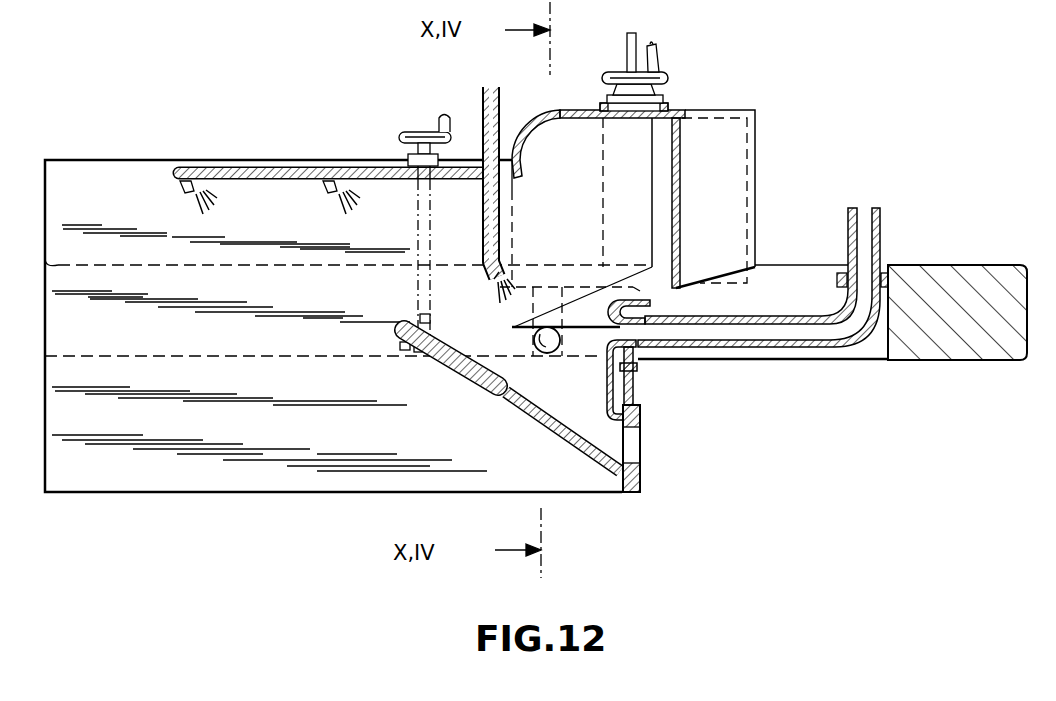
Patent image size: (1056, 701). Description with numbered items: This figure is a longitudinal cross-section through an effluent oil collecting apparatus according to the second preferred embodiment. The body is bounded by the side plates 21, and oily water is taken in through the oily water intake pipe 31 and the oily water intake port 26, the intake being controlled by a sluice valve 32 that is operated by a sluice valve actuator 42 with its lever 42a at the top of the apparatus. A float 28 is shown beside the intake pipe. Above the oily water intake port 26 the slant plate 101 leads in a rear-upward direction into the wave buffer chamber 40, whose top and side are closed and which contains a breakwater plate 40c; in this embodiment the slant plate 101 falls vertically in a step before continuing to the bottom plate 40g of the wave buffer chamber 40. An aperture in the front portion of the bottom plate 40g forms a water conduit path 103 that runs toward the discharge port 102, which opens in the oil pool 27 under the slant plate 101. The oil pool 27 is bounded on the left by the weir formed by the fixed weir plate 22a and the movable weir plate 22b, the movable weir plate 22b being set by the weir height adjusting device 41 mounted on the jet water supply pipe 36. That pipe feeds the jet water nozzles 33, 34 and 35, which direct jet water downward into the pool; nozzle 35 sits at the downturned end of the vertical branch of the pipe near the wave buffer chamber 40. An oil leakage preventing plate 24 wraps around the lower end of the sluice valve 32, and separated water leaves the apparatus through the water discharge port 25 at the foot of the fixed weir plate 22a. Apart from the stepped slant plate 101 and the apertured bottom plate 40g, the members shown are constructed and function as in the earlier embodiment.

The side plates 21 is at (117, 181).
The jet water supply pipe 36 is at (285, 167).
The weir height adjusting device 41 is at (408, 131).
The jet water nozzle 33 is at (187, 194).
The jet water nozzle 34 is at (328, 194).
The jet water nozzle 35 is at (482, 268).
The water conduit path 103 is at (535, 302).
The sluice valve actuator 42 is at (625, 54).
The valve lever 42a is at (656, 58).
The wave buffer chamber 40 is at (762, 84).
The breakwater plate 40c is at (681, 168).
The bottom plate 40g is at (584, 284).
The oil pool 27 is at (321, 338).
The discharge port 102 is at (534, 340).
The slant plate 101 is at (652, 292).
The oily water intake pipe 31 is at (835, 324).
The float 28 is at (978, 338).
The movable weir plate 22b is at (468, 368).
The fixed weir plate 22a is at (568, 437).
The water discharge port 25 is at (640, 444).
The oil leakage preventing plate 24 is at (607, 404).
The sluice valve 32 is at (633, 386).
The oily water intake port 26 is at (630, 334).